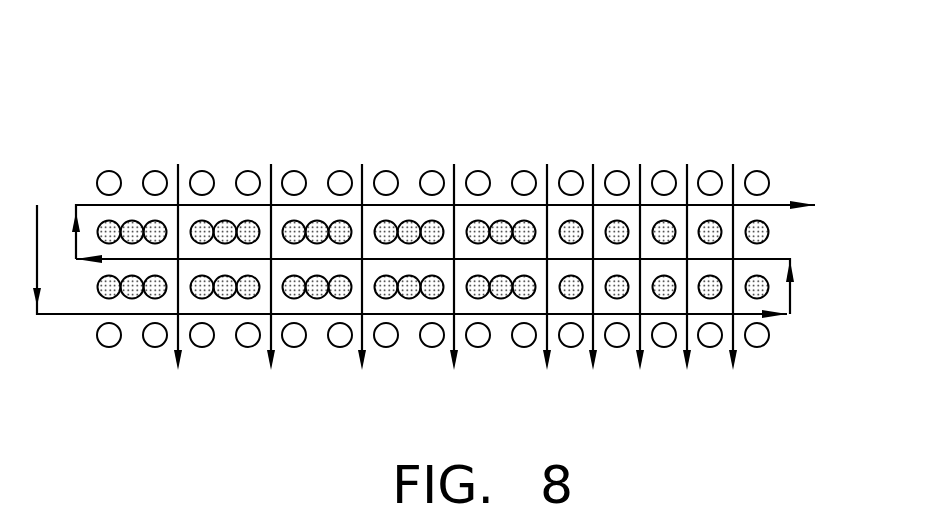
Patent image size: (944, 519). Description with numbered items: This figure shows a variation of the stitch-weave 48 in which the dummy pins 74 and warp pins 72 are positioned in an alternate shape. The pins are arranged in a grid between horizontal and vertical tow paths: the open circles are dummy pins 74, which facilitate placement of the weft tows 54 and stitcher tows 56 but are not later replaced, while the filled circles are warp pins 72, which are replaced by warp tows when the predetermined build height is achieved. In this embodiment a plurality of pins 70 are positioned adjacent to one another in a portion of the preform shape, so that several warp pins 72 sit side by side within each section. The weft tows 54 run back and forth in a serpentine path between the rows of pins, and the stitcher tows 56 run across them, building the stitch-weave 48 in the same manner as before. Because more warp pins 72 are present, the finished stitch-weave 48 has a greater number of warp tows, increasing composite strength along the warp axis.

The stitch-weave 48 is at (729, 58).
The weft tows 54 is at (790, 293).
The stitcher tows 56 is at (547, 178).
The pins 70 is at (409, 290).
The warp pins 72 is at (438, 222).
The dummy pins 74 is at (757, 183).